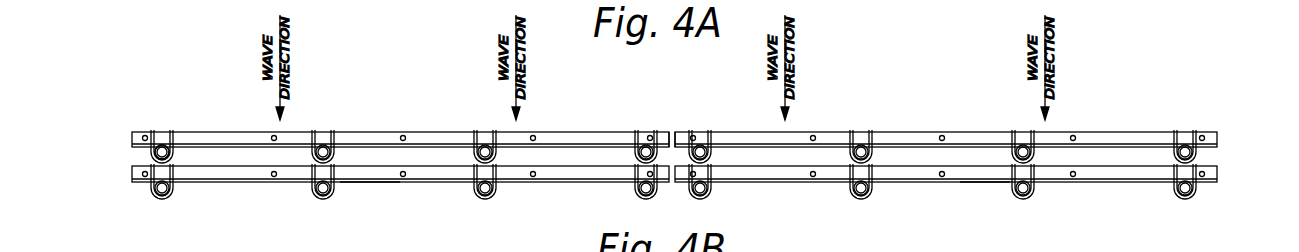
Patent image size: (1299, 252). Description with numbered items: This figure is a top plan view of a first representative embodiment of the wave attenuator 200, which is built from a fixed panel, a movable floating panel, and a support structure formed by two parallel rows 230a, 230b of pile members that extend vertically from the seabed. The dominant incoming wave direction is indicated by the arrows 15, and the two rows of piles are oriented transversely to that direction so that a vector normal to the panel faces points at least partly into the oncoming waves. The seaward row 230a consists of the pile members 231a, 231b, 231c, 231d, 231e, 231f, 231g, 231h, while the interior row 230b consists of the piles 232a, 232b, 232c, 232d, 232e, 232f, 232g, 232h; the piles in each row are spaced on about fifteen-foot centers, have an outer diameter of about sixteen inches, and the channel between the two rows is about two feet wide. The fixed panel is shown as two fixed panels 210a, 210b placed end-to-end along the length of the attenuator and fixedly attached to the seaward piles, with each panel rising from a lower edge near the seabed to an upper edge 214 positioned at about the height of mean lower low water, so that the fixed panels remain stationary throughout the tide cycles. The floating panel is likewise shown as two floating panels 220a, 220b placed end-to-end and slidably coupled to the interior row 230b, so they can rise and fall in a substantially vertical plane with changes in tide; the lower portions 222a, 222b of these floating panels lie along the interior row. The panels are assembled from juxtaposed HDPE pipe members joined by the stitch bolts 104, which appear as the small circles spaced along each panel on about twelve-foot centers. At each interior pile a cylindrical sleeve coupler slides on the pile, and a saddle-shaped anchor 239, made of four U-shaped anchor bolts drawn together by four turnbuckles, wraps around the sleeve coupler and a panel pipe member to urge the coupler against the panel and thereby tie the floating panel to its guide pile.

The dominant incoming wave direction arrows 15 is at (278, 27).
The stitch bolts 104 is at (276, 140).
The wave attenuator 200 is at (1118, 62).
The fixed panel 210a is at (213, 131).
The fixed panel 210b is at (1218, 135).
The upper edge 214 is at (430, 131).
The floating panel 220a is at (218, 183).
The floating panel 220b is at (1218, 170).
The lower rail web 222a is at (372, 170).
The lower rail web 222b is at (990, 182).
The row of pile members 230a is at (674, 116).
The row of pile members 230b is at (674, 198).
The pile member 231a is at (165, 146).
The pile member 231b is at (325, 145).
The pile member 231c is at (487, 145).
The pile member 231d is at (643, 145).
The pile member 231e is at (705, 145).
The pile member 231f is at (861, 145).
The pile member 231g is at (1023, 145).
The pile member 231h is at (1183, 145).
The pile 232a is at (162, 199).
The pile 232b is at (323, 199).
The pile 232c is at (485, 199).
The pile 232d is at (646, 197).
The pile 232e is at (700, 199).
The pile 232f is at (861, 199).
The pile 232g is at (1023, 199).
The pile 232h is at (1185, 199).
The saddle-shaped anchor 239 is at (172, 150).